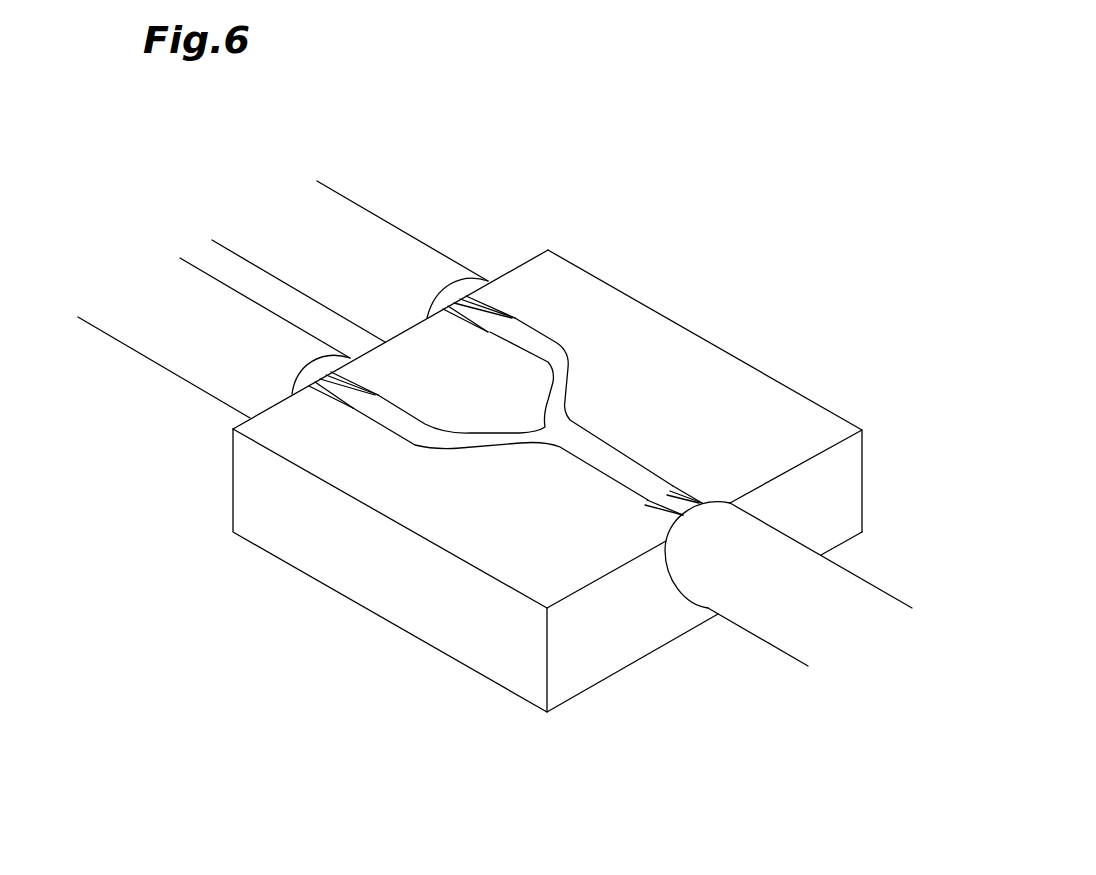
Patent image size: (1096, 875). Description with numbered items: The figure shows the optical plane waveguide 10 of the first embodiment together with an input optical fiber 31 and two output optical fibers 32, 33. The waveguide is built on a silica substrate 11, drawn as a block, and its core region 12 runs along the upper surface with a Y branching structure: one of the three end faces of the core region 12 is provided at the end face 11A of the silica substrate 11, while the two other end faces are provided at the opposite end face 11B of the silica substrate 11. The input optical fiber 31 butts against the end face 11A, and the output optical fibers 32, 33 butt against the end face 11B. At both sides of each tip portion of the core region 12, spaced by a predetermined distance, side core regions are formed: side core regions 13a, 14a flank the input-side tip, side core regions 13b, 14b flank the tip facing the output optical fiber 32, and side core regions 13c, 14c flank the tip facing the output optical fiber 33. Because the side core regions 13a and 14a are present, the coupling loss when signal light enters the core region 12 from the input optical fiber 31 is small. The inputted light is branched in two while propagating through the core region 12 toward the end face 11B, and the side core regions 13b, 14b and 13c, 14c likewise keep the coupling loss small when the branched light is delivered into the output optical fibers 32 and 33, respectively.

The optical plane waveguide 10 is at (763, 262).
The silica substrate 11 is at (832, 420).
The end face 11A is at (856, 471).
The end face 11B is at (532, 253).
The core region 12 is at (590, 460).
The side core region 13a is at (658, 508).
The side core region 13b is at (327, 395).
The side core region 13c is at (470, 328).
The side core region 14a is at (682, 489).
The side core region 14b is at (358, 378).
The side core region 14c is at (496, 303).
The input optical fiber 31 is at (865, 577).
The output optical fiber 32 is at (152, 355).
The output optical fiber 33 is at (360, 213).